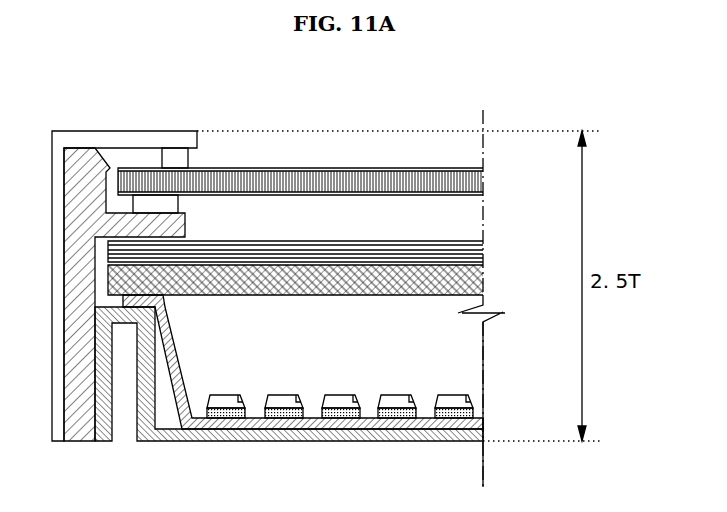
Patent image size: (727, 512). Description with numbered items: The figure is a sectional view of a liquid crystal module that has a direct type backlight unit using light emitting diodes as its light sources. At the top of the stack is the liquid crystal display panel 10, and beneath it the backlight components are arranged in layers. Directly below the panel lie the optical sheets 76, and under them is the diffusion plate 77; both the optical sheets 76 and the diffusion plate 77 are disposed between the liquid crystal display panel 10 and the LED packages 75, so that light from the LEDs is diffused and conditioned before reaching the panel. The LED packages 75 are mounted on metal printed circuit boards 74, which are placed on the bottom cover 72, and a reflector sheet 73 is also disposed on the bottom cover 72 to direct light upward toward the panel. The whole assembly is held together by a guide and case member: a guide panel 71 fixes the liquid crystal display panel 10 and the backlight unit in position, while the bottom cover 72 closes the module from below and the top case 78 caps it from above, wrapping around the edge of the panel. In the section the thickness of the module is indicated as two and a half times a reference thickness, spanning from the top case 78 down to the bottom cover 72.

The liquid crystal display panel 10 is at (478, 182).
The guide panel 71 is at (73, 157).
The bottom cover 72 is at (427, 437).
The reflector sheet 73 is at (365, 423).
The metal printed circuit board 74 is at (290, 413).
The LED package 75 is at (277, 402).
The optical sheets 76 is at (478, 250).
The diffusion plate 77 is at (478, 279).
The top case 78 is at (155, 135).